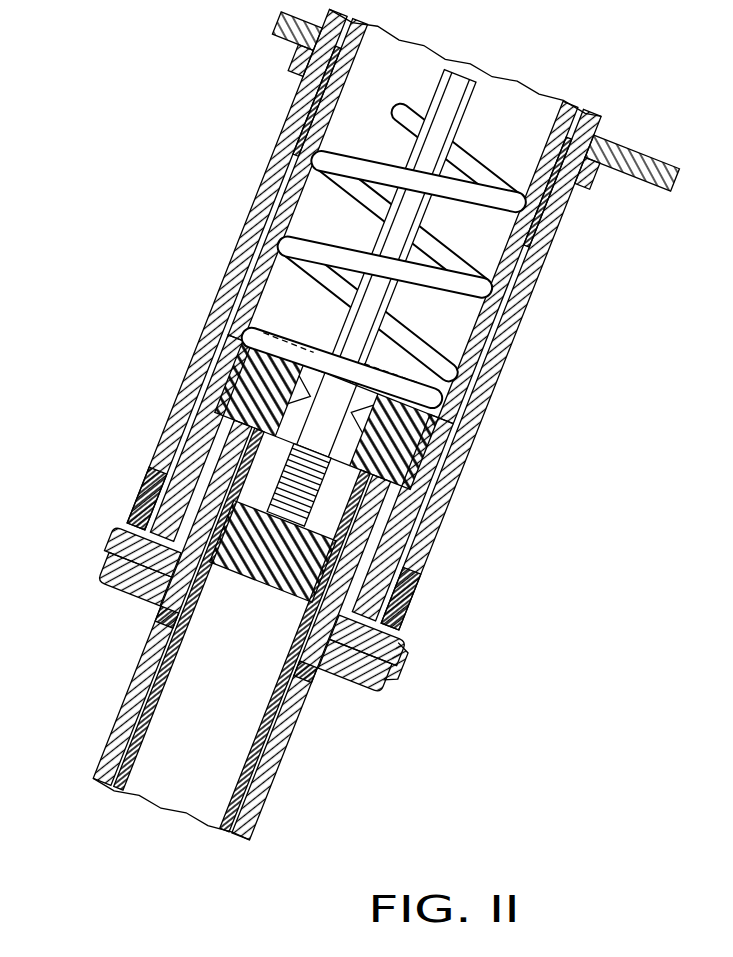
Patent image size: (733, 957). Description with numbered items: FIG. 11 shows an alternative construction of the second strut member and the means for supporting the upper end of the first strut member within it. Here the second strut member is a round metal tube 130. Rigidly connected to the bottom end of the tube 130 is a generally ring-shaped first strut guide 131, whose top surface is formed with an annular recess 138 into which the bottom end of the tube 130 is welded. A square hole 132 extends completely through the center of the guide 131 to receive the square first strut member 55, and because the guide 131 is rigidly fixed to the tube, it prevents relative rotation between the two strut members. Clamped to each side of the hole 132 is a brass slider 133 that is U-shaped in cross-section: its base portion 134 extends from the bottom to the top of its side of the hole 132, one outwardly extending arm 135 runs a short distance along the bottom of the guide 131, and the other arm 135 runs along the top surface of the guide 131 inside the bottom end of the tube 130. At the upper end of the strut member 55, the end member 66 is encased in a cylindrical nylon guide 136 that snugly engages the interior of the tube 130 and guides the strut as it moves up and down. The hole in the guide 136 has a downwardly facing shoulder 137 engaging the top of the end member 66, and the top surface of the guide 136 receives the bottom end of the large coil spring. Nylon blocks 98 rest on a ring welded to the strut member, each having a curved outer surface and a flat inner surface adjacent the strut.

The first strut member 55 is at (143, 665).
The end member 66 is at (413, 483).
The nylon block 98 is at (213, 343).
The round metal tube 130 is at (498, 287).
The first strut guide 131 is at (397, 667).
The square hole 132 is at (118, 580).
The brass slider 133 is at (400, 658).
The base portion 134 is at (103, 556).
The outwardly extending arm 135 is at (157, 470).
The cylindrical nylon guide 136 is at (438, 447).
The downwardly facing shoulder 137 is at (413, 388).
The annular recess 138 is at (400, 647).